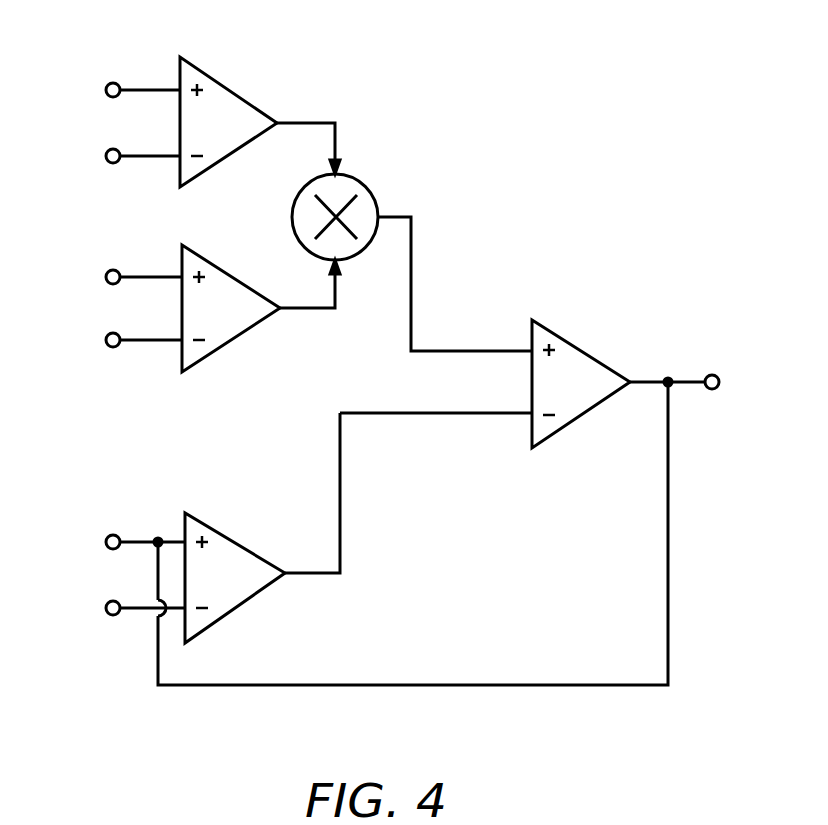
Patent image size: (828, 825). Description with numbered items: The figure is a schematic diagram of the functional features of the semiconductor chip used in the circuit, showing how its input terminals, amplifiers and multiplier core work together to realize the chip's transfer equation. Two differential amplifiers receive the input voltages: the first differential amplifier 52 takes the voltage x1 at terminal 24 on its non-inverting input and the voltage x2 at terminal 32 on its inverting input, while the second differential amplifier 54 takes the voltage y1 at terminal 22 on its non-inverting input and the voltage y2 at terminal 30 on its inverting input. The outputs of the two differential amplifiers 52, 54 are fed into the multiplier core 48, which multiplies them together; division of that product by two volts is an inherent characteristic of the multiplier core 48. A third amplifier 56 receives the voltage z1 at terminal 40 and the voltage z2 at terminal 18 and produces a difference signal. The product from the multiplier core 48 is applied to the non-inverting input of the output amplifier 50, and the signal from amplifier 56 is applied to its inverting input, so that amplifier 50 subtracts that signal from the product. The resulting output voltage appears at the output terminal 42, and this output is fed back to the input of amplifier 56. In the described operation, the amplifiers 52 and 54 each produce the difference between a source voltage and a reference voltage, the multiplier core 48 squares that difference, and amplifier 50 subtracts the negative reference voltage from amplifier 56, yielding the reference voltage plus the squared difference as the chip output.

The terminal 18 is at (108, 613).
The terminal 22 is at (106, 274).
The terminal 24 is at (106, 86).
The terminal 30 is at (106, 339).
The terminal 32 is at (108, 161).
The terminal 40 is at (109, 538).
The output terminal 42 is at (658, 380).
The multiplier core 48 is at (292, 217).
The amplifier 50 is at (587, 400).
The differential amplifier 52 is at (245, 112).
The differential amplifier 54 is at (233, 330).
The amplifier 56 is at (250, 565).